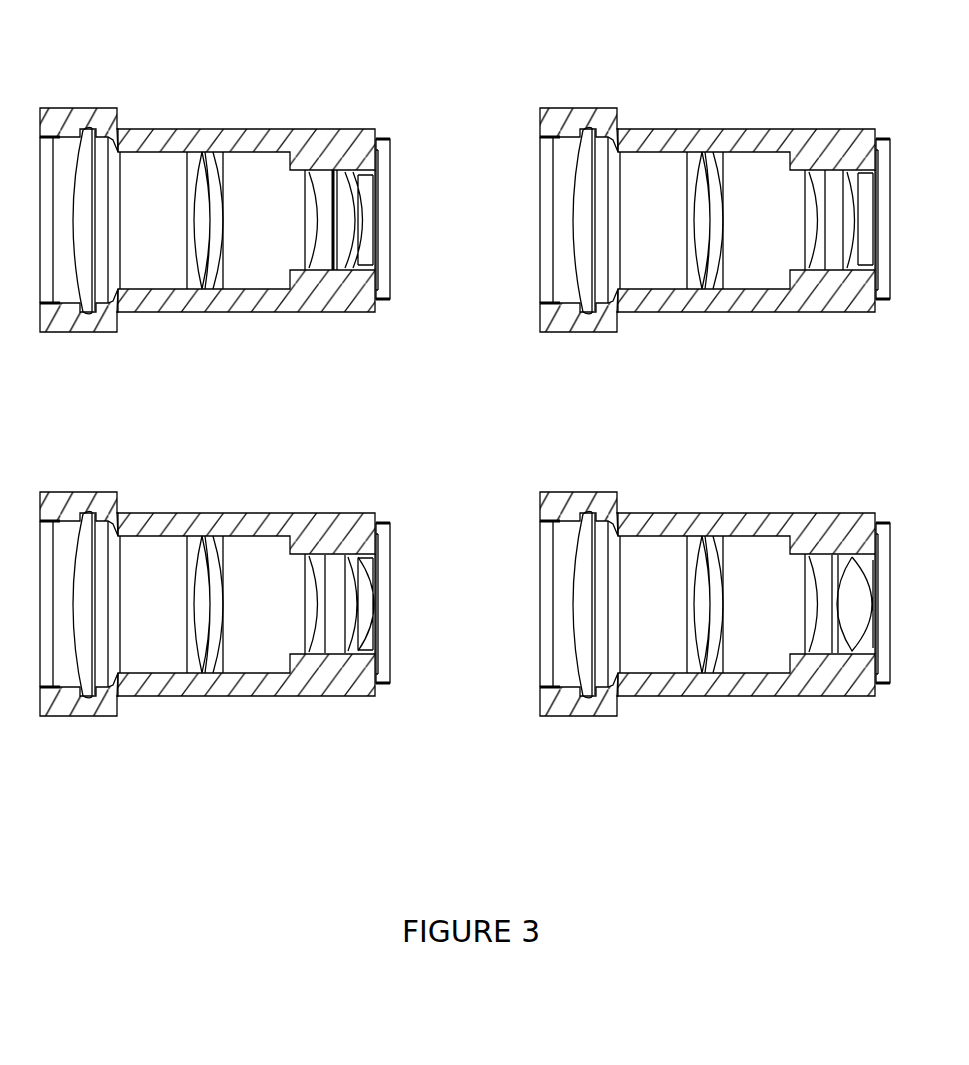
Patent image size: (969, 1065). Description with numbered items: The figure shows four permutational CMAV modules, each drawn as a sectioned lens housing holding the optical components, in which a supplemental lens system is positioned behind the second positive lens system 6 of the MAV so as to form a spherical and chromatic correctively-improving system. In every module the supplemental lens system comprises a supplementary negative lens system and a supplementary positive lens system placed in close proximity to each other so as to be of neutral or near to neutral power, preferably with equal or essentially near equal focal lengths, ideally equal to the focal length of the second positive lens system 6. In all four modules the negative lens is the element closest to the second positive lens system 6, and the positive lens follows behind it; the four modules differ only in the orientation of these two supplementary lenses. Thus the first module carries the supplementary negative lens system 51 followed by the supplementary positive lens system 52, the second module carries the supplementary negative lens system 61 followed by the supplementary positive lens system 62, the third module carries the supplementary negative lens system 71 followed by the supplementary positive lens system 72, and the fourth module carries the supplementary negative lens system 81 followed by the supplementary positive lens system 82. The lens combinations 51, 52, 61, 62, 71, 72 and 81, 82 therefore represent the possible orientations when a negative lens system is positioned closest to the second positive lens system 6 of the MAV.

The second positive lens system 6 is at (307, 236).
The supplementary negative lens system 51 is at (340, 217).
The supplementary positive lens system 52 is at (362, 218).
The supplementary negative lens system 61 is at (836, 210).
The supplementary positive lens system 62 is at (862, 218).
The supplementary negative lens system 71 is at (340, 601).
The supplementary positive lens system 72 is at (365, 602).
The supplementary negative lens system 81 is at (836, 598).
The supplementary positive lens system 82 is at (862, 604).